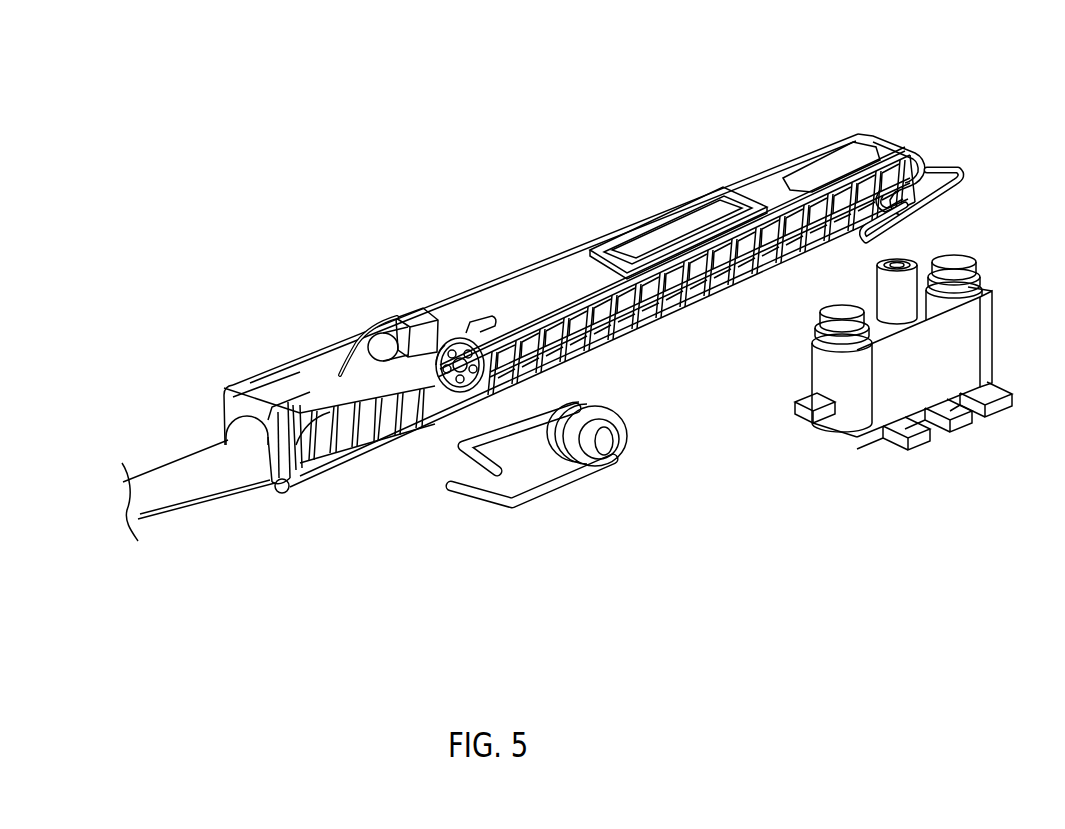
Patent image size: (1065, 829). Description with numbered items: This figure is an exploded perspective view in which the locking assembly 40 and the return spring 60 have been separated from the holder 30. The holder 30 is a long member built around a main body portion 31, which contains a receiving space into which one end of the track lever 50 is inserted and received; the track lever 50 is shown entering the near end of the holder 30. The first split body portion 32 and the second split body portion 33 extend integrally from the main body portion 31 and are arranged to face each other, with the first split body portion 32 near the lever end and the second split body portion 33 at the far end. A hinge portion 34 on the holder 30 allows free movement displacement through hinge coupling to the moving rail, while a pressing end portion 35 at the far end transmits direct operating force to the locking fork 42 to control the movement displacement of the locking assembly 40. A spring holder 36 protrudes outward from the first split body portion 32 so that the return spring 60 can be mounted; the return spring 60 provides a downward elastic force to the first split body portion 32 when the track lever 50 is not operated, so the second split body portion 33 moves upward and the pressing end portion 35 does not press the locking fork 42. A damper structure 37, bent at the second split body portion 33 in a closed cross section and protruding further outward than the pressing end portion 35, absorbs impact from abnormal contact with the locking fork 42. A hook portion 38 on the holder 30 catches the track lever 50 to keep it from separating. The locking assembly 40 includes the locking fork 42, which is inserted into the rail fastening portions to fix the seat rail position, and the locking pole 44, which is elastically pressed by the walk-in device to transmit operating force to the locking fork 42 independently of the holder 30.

The holder 30 is at (622, 276).
The main body portion 31 is at (569, 310).
The first split body portion 32 is at (288, 396).
The second split body portion 33 is at (861, 131).
The hinge portion 34 is at (449, 312).
The pressing end portion 35 is at (897, 143).
The spring holder 36 is at (389, 316).
The damper structure 37 is at (941, 205).
The hook portion 38 is at (678, 191).
The locking assembly 40 is at (840, 371).
The locking fork 42 is at (903, 439).
The locking pole 44 is at (964, 285).
The track lever 50 is at (198, 492).
The return spring 60 is at (539, 477).